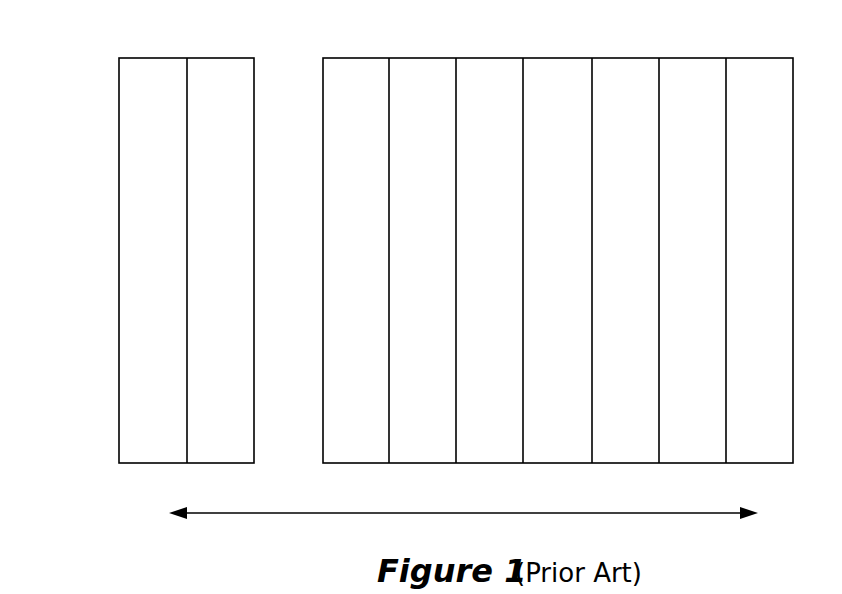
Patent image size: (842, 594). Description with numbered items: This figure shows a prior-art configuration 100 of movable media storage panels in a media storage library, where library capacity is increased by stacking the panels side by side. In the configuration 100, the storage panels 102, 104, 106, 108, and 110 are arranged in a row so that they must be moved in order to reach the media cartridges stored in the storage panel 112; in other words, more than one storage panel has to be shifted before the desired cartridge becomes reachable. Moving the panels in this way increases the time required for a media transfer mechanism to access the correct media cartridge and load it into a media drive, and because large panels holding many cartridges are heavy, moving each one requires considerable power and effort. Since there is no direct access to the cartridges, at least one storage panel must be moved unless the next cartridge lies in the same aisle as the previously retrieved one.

The configuration 100 is at (72, 52).
The storage panel 102 is at (347, 58).
The storage panel 104 is at (431, 58).
The storage panel 106 is at (498, 58).
The storage panel 108 is at (565, 58).
The storage panel 110 is at (632, 58).
The storage panel 112 is at (683, 58).